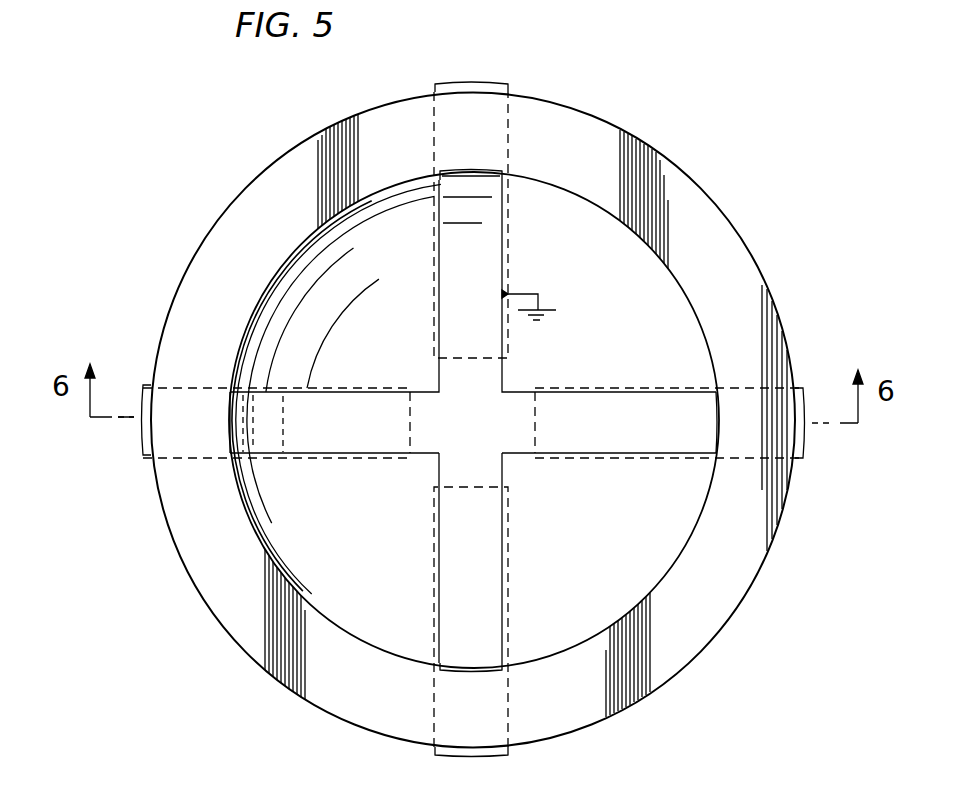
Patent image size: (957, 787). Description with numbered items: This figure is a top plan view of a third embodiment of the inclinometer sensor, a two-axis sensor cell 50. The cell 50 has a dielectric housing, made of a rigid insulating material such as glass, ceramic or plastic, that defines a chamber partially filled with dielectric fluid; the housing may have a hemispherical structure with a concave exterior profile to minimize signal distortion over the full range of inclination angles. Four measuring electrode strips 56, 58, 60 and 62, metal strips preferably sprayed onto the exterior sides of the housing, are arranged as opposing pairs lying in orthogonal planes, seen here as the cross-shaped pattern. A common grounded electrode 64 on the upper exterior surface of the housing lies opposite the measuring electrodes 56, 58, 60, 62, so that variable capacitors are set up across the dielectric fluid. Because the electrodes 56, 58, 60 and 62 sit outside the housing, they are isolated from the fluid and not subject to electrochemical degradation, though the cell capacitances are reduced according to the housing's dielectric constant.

The sensor cell 50 is at (178, 203).
The electrode strip 56 is at (698, 388).
The electrode strip 58 is at (511, 120).
The electrode strip 60 is at (152, 385).
The electrode strip 62 is at (514, 722).
The common grounded electrode 64 is at (288, 391).